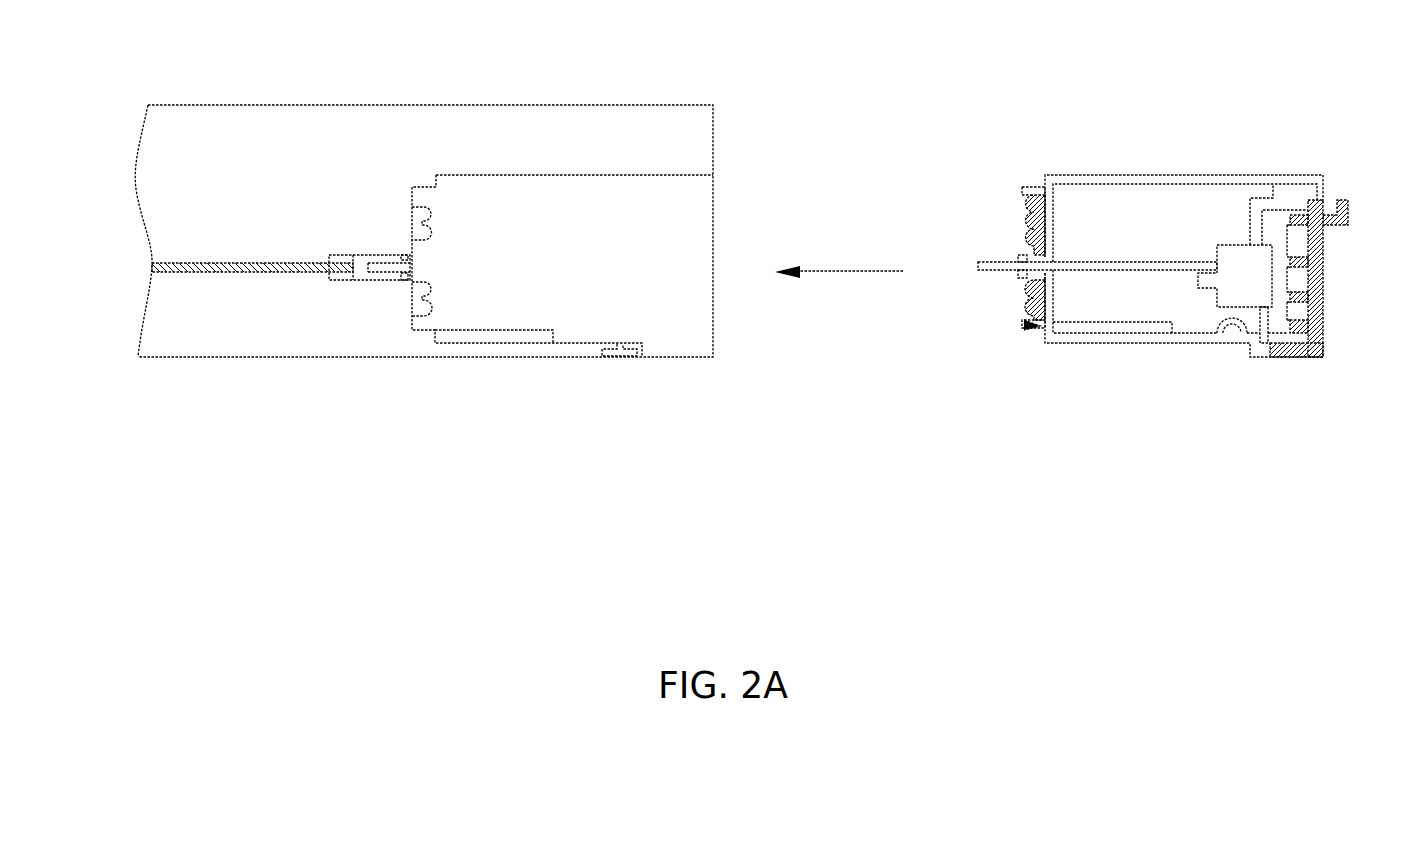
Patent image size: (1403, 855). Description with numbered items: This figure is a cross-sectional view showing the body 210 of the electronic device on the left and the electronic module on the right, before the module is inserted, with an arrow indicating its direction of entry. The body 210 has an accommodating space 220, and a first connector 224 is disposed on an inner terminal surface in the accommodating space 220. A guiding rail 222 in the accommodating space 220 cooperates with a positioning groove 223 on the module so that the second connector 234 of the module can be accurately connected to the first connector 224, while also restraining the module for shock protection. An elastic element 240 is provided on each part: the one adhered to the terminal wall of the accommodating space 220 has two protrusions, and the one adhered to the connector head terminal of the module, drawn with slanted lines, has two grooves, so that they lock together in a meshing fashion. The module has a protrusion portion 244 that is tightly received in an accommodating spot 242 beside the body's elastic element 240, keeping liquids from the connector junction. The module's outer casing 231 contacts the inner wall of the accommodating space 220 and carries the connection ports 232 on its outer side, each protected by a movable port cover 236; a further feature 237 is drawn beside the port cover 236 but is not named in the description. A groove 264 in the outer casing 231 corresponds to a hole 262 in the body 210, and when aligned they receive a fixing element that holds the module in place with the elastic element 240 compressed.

The body 210 is at (194, 137).
The accommodating space 220 is at (682, 237).
The elastic element 240 is at (418, 185).
The first connector 224 is at (360, 280).
The accommodating spot 242 is at (441, 323).
The guiding rail 222 is at (505, 335).
The hole 262 is at (618, 346).
The second connector 234 is at (992, 262).
The outer casing 231 is at (1172, 183).
The connection ports 232 is at (1236, 258).
The hook 237 is at (1323, 258).
The port covers 236 is at (1323, 272).
The protrusion portion 244 is at (1022, 322).
The positioning groove 223 is at (1104, 333).
The groove 264 is at (1230, 326).